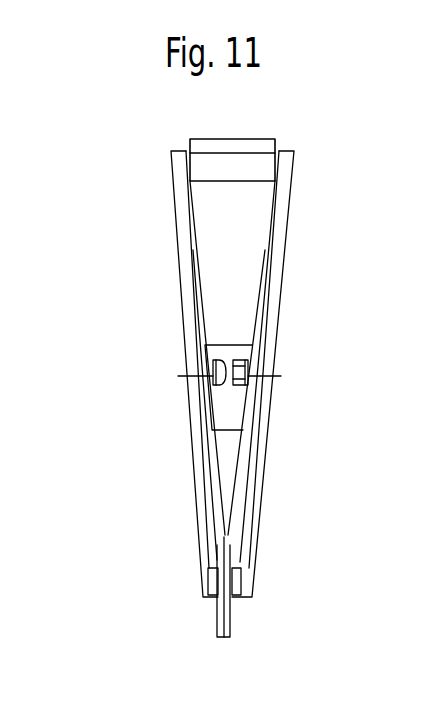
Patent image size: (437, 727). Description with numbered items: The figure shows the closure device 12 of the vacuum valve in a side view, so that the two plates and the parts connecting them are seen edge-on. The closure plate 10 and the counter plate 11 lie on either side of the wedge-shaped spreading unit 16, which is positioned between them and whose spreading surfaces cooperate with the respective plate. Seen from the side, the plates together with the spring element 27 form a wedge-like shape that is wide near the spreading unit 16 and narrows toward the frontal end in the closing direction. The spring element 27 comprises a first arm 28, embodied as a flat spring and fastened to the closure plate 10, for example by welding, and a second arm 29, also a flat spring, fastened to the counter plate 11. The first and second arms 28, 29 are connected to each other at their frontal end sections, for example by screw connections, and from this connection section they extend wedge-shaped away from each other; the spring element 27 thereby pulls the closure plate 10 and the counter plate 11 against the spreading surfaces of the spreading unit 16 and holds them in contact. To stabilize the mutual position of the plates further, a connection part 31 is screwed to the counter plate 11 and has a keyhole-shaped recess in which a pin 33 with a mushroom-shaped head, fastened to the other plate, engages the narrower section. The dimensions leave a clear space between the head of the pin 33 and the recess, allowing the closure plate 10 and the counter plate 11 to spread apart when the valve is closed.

The closure plate 10 is at (182, 230).
The counter plate 11 is at (285, 216).
The closure device 12 is at (334, 151).
The spreading unit 16 is at (270, 293).
The spring element 27 is at (232, 616).
The first arm 28 is at (215, 485).
The second arm 29 is at (245, 472).
The connection part 31 is at (225, 408).
The pin 33 is at (213, 373).